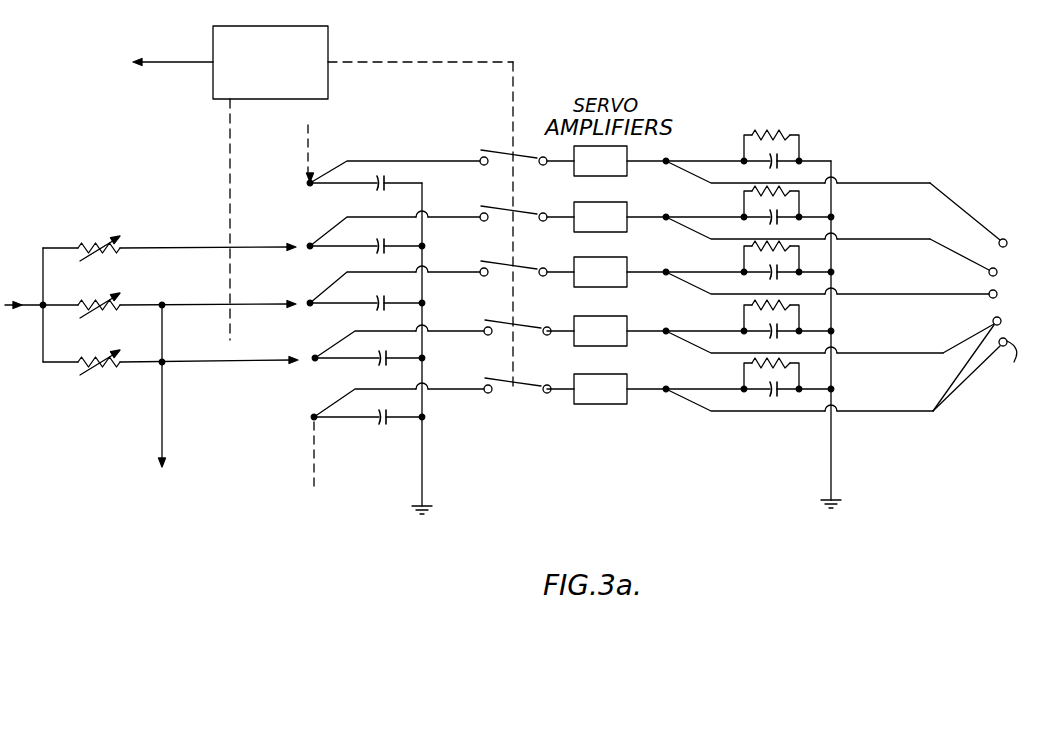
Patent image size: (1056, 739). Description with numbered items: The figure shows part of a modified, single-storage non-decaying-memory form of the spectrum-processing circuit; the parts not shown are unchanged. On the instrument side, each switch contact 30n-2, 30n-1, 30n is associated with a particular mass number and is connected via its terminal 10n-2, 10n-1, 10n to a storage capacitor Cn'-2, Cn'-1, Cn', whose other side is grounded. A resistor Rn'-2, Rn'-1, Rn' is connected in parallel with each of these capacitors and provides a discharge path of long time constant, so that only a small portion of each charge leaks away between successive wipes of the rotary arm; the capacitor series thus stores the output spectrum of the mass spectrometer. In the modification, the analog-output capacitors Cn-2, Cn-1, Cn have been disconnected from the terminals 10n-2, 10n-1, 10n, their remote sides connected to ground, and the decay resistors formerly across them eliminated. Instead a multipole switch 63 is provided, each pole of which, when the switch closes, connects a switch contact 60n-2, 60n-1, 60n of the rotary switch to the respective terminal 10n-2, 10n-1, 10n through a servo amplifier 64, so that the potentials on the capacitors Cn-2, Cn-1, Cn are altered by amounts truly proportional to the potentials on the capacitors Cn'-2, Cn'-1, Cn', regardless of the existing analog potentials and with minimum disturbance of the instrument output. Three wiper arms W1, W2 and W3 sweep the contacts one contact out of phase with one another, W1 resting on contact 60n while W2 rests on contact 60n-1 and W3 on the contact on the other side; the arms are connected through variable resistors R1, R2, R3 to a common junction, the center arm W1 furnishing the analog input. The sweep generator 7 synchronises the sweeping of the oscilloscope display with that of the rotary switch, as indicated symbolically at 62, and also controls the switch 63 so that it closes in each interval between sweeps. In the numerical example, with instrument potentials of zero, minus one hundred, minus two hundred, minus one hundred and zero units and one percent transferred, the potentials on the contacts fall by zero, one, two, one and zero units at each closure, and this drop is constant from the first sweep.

The sweep generator 7 is at (213, 32).
The synchronising connection 62 is at (230, 143).
The multipole switch 63 is at (513, 122).
The servo amplifier 64 is at (577, 176).
The switch contact 60n-2 is at (310, 183).
The switch contact 60n-1 is at (310, 244).
The switch contact 60n is at (310, 302).
The center wiper arm W1 is at (246, 313).
The wiper arm W2 is at (246, 257).
The wiper arm W3 is at (246, 371).
The variable resistor R1 is at (100, 292).
The variable resistor R2 is at (100, 235).
The variable resistor R3 is at (100, 349).
The analog output capacitor Cn-2 is at (366, 198).
The analog output capacitor Cn-1 is at (367, 258).
The analog output capacitor Cn is at (367, 315).
The terminal 10n-2 is at (664, 165).
The terminal 10n-1 is at (664, 221).
The terminal 10n is at (664, 276).
The discharge resistor Rn'-2 is at (774, 134).
The discharge resistor Rn'-1 is at (732, 203).
The discharge resistor Rn' is at (732, 259).
The instrument output capacitor Cn'-2 is at (832, 158).
The instrument output capacitor Cn'-1 is at (826, 218).
The instrument output capacitor Cn' is at (817, 276).
The switch contact 30n-2 is at (1006, 239).
The switch contact 30n-1 is at (990, 275).
The switch contact 30n is at (994, 299).